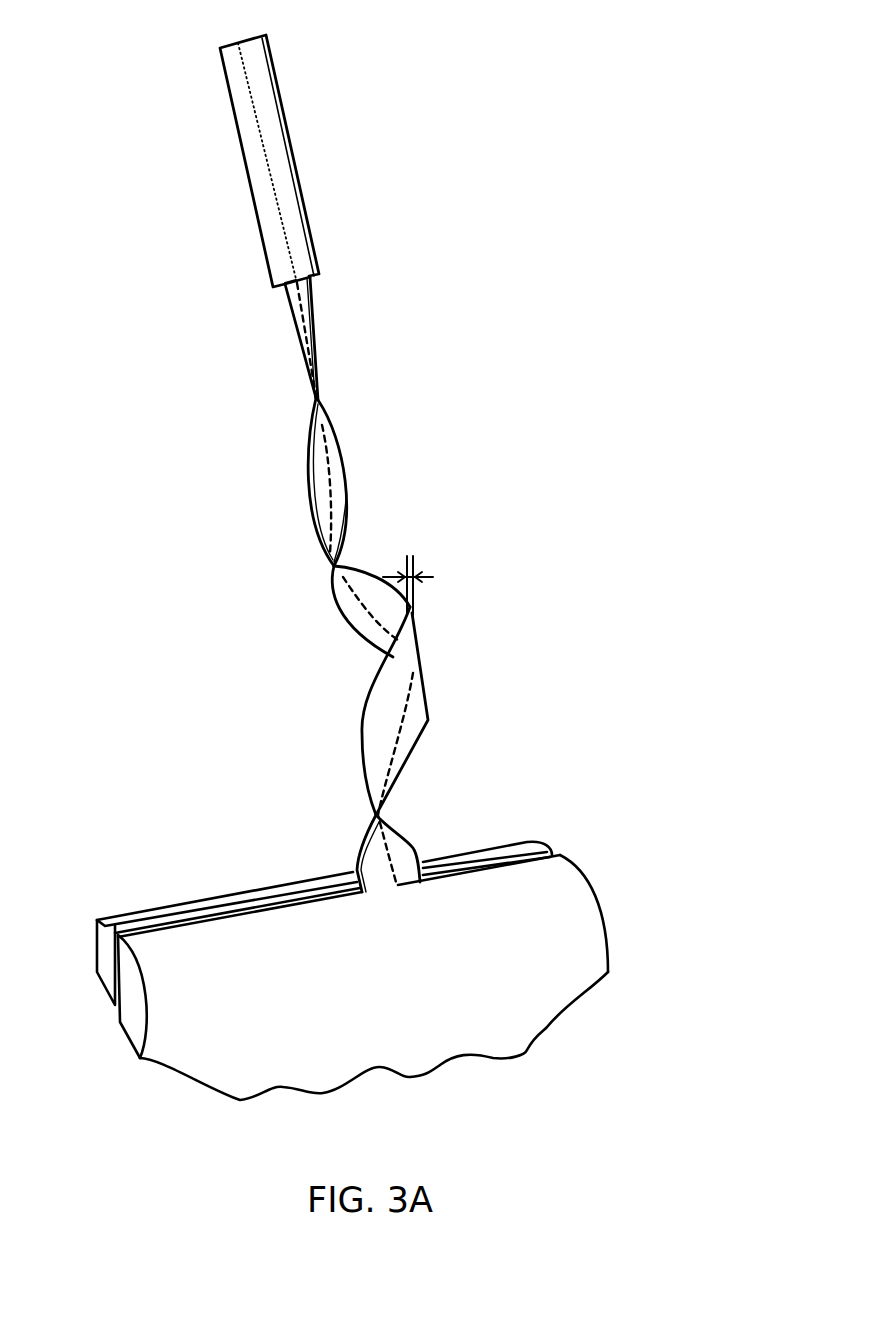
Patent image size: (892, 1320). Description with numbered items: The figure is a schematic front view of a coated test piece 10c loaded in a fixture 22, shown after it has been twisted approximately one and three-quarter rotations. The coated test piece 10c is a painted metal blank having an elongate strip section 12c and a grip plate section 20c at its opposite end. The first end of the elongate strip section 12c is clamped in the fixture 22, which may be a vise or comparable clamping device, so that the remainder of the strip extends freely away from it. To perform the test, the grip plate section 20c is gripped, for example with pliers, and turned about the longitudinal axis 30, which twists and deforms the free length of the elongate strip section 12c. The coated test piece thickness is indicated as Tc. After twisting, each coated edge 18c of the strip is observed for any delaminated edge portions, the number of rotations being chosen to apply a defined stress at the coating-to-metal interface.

The coated test piece 10c is at (404, 33).
The grip plate section 20c is at (292, 195).
The coated edge 18c is at (318, 317).
The elongate strip section 12c is at (373, 524).
The longitudinal axis 30 is at (252, 73).
The coated test piece thickness Tc is at (427, 583).
The fixture 22 is at (595, 888).